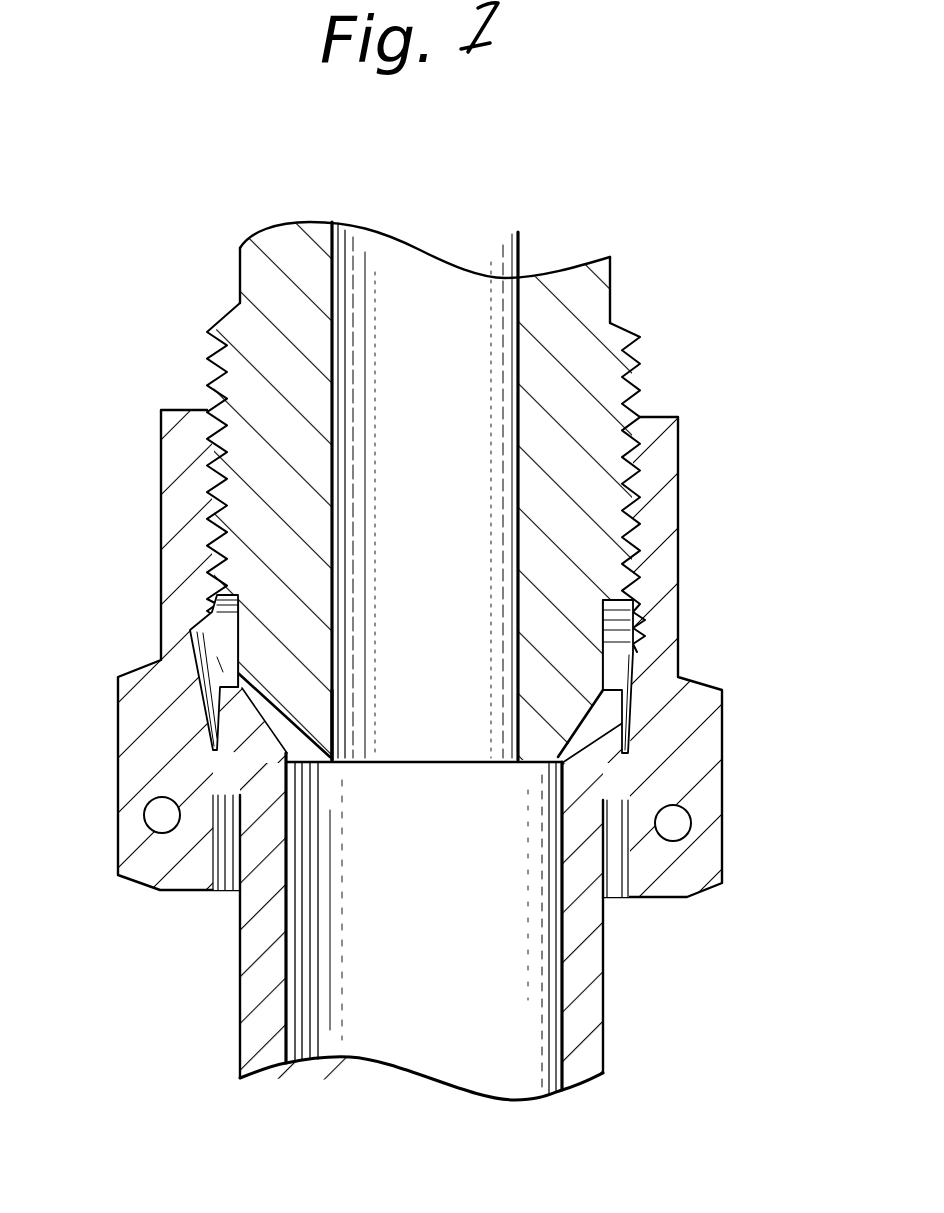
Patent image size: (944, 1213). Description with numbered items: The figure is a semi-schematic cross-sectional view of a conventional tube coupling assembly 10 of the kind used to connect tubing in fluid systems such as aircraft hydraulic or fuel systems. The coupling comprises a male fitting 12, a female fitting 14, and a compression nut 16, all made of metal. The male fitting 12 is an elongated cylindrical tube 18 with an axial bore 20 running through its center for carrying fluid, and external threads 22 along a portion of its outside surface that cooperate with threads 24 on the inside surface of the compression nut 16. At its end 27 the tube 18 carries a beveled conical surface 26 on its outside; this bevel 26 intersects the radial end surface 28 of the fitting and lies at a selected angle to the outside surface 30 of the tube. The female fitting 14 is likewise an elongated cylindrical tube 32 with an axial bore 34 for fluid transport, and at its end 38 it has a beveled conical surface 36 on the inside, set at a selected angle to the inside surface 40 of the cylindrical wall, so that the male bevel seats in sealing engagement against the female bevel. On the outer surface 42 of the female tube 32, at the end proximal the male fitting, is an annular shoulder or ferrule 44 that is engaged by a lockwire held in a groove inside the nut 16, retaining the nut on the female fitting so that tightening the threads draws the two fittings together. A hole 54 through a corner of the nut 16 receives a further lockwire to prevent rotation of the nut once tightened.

The tube coupling assembly 10 is at (213, 225).
The male fitting 12 is at (628, 266).
The female fitting 14 is at (620, 1003).
The compression nut 16 is at (690, 558).
The elongated cylindrical tube 18 is at (592, 325).
The axial bore 20 is at (428, 393).
The external threads 22 is at (207, 355).
The threads 24 is at (640, 604).
The beveled conical surface 26 is at (300, 783).
The end of the cylindrical tube 27 is at (352, 712).
The radial end surface 28 is at (460, 768).
The outside surface of the cylindrical tube 30 is at (606, 661).
The elongated cylindrical tube 32 is at (239, 946).
The axial bore 34 is at (441, 964).
The beveled conical surface 36 is at (224, 730).
The end of the cylindrical tube 38 is at (216, 748).
The inside surface of the cylindrical wall 40 is at (290, 867).
The outer surface 42 is at (604, 952).
The annular shoulder or ferrule 44 is at (615, 745).
The hole 54 is at (680, 824).